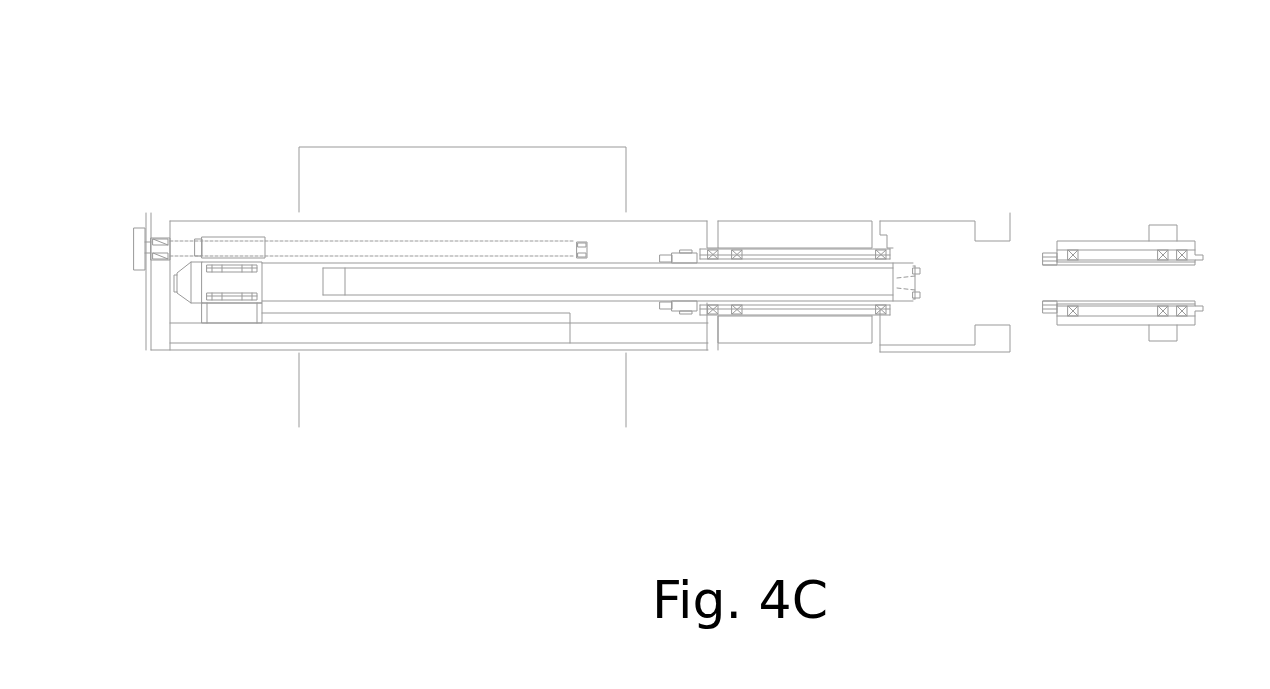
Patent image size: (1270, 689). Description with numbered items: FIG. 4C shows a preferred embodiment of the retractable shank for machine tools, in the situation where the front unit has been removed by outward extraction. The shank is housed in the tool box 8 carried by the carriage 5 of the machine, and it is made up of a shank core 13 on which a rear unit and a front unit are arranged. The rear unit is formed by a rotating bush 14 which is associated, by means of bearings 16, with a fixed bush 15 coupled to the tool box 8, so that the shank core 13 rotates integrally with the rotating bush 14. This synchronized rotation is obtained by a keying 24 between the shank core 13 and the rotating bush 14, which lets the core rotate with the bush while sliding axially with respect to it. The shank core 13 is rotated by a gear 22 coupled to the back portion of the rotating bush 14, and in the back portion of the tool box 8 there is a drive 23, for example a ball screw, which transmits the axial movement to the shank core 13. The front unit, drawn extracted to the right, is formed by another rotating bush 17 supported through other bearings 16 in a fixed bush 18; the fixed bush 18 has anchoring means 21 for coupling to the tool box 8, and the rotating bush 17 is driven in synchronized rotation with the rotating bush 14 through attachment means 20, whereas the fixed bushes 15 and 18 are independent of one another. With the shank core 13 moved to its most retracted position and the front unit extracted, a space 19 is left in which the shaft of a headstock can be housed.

The carriage 5 is at (462, 187).
The tool box 8 is at (921, 352).
The shank core 13 is at (632, 285).
The rotating bush 14 is at (760, 260).
The fixed bush 15 is at (834, 248).
The bearings 16 is at (878, 314).
The rotating bush 17 is at (1125, 263).
The fixed bush 18 is at (1190, 247).
The space 19 is at (946, 280).
The attachment means 20 is at (1045, 303).
The anchoring means 21 is at (1157, 237).
The gear 22 is at (688, 249).
The drive 23 is at (235, 249).
The keying 24 is at (683, 300).